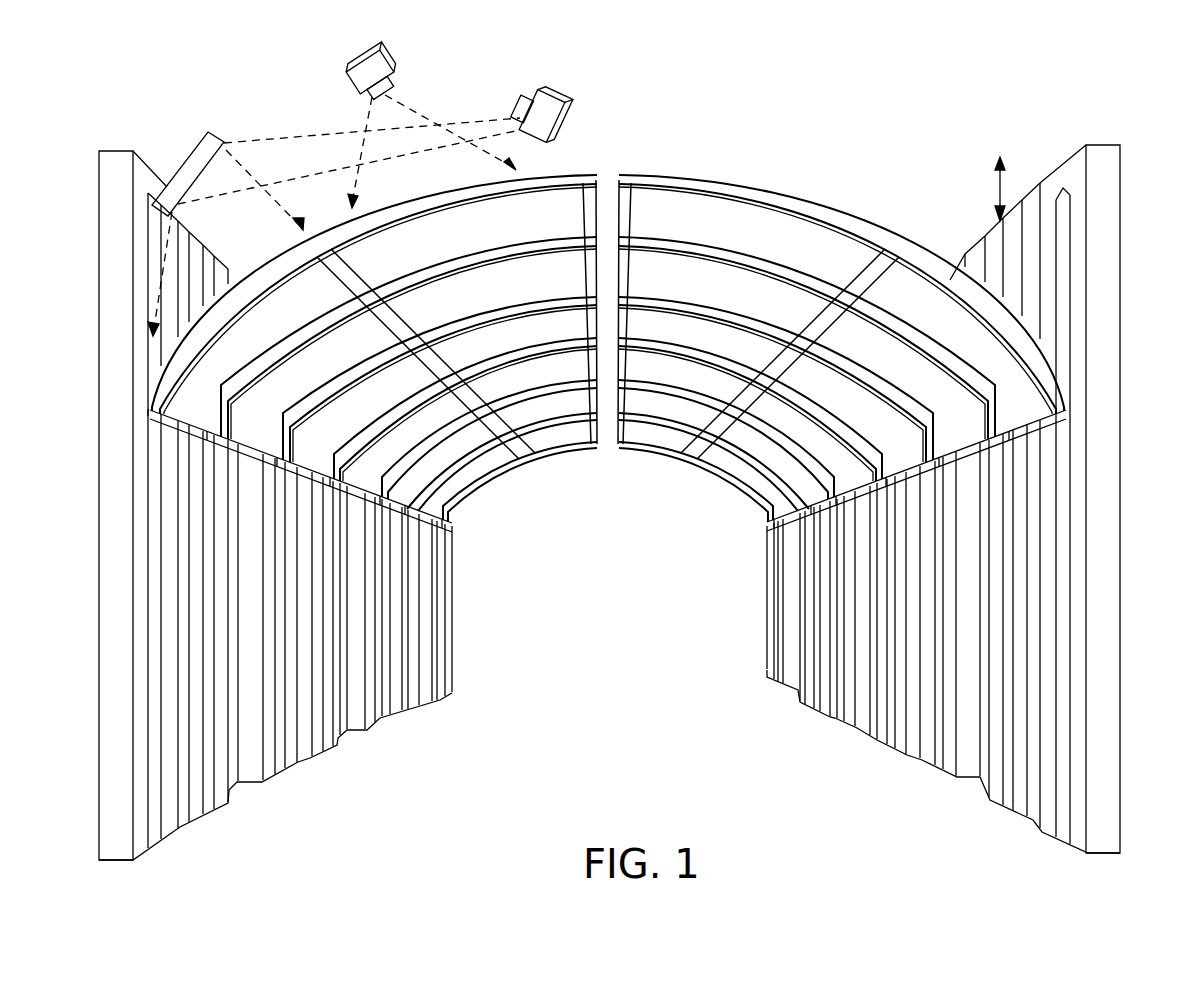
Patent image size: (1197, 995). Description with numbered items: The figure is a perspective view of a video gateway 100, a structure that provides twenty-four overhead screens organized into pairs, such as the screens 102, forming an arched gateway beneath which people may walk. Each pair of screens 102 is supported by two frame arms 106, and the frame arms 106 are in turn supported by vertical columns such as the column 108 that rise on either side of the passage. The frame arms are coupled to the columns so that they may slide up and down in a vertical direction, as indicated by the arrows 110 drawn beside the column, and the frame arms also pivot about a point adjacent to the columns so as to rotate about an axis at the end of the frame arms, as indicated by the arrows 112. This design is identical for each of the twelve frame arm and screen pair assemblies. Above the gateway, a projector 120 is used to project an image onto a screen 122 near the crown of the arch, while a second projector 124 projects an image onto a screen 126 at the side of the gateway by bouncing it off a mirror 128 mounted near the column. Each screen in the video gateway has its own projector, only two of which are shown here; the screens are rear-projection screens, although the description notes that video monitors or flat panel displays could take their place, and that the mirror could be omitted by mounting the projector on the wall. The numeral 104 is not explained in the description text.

The video gateway 100 is at (946, 126).
The screens 102 is at (800, 250).
The passage floor area 104 is at (742, 782).
The frame arms 106 is at (985, 395).
The column 108 is at (1108, 176).
The arrows 110 is at (997, 188).
The arrows 112 is at (1110, 332).
The projector 120 is at (392, 66).
The screen 122 is at (568, 200).
The projector 124 is at (560, 118).
The screen 126 is at (190, 395).
The mirror 128 is at (204, 134).